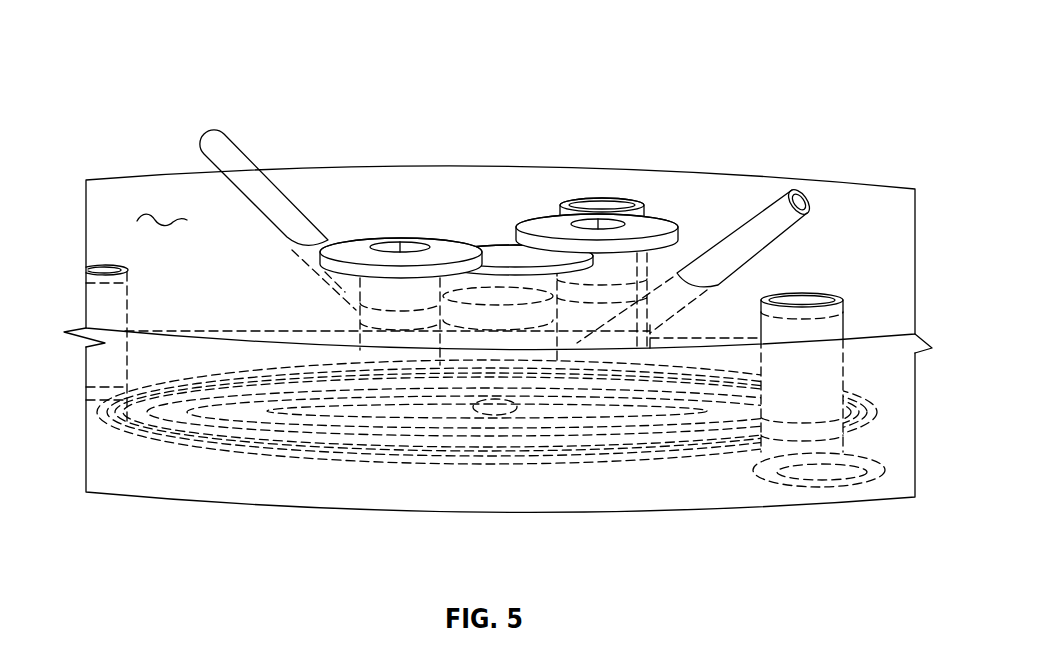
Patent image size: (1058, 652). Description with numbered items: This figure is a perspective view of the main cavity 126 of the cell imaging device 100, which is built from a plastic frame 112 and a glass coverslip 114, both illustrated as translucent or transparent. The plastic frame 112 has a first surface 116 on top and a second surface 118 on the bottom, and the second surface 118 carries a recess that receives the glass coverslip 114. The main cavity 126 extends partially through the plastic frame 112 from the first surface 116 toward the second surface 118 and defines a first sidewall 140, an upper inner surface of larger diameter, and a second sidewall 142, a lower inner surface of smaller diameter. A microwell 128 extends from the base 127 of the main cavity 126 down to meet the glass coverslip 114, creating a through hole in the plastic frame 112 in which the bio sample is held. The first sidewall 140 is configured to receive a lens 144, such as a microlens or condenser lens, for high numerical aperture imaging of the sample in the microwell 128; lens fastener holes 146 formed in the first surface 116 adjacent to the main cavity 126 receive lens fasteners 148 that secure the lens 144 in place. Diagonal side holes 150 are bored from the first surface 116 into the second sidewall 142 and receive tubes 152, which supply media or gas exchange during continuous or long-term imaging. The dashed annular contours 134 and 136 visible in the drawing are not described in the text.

The cell imaging device 100 is at (137, 45).
The plastic frame 112 is at (887, 183).
The glass coverslip 114 is at (873, 415).
The first surface 116 is at (162, 217).
The second surface 118 is at (160, 502).
The main cavity 126 is at (627, 257).
The base 127 is at (447, 417).
The microwell 128 is at (498, 413).
The outer channel 134 is at (550, 447).
The inner channel 136 is at (383, 412).
The first sidewall 140 is at (593, 290).
The second sidewall 142 is at (584, 387).
The lens 144 is at (500, 250).
The lens fastener hole 146 is at (362, 388).
The lens fastener 148 is at (440, 247).
The diagonal side holes 150 is at (302, 258).
The tubes 152 is at (280, 186).